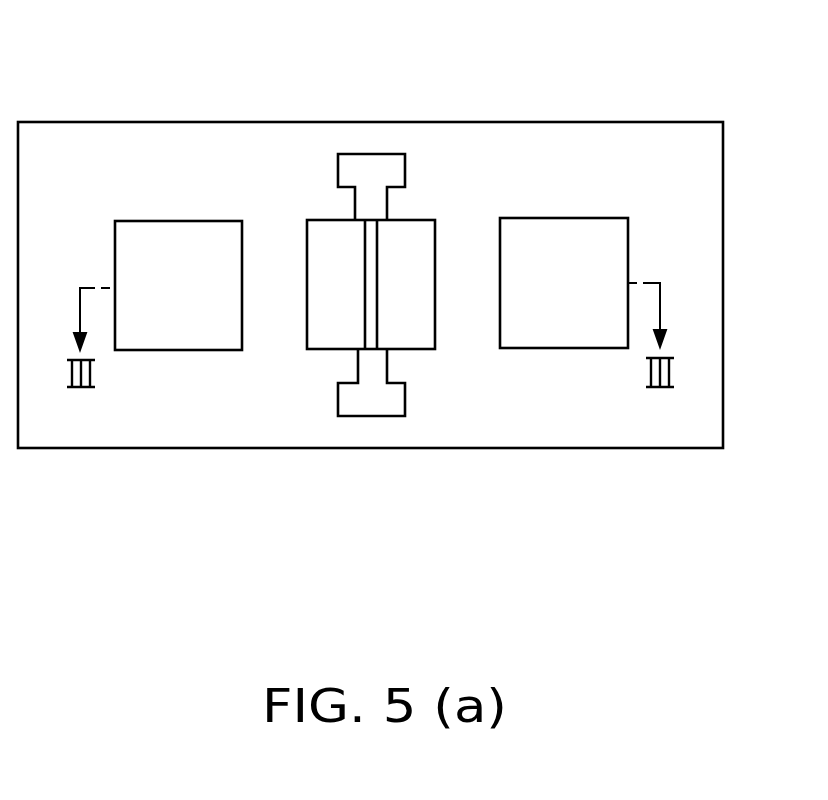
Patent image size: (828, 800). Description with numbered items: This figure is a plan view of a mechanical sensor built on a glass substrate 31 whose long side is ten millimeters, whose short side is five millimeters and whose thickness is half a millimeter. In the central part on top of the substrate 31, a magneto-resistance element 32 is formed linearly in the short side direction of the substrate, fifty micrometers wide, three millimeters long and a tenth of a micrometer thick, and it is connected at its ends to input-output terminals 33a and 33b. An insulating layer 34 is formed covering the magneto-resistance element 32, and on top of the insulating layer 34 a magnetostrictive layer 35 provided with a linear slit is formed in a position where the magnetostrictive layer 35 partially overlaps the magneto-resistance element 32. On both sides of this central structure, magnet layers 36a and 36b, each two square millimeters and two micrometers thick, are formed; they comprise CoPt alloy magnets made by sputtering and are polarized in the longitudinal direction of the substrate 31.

The glass substrate 31 is at (682, 172).
The magneto-resistance element 32 is at (333, 275).
The input-output terminal 33a is at (375, 168).
The input-output terminal 33b is at (352, 407).
The insulating layer 34 is at (370, 323).
The magnetostrictive layer 35 is at (330, 233).
The magnet layer 36a is at (161, 238).
The magnet layer 36b is at (565, 238).